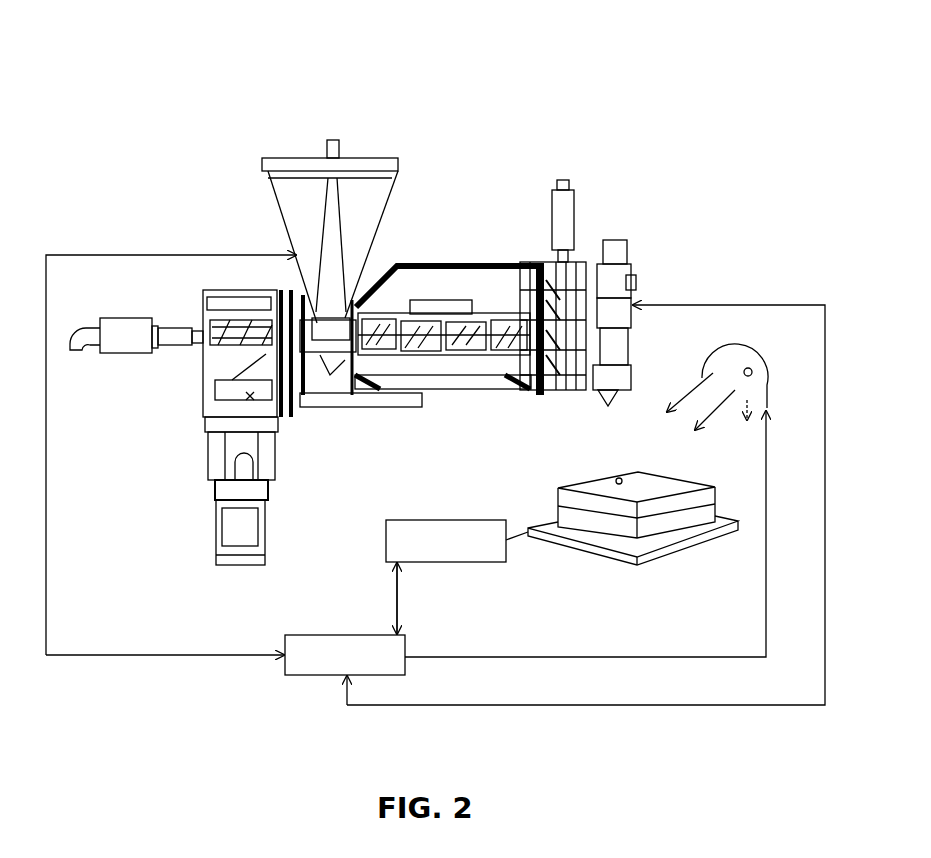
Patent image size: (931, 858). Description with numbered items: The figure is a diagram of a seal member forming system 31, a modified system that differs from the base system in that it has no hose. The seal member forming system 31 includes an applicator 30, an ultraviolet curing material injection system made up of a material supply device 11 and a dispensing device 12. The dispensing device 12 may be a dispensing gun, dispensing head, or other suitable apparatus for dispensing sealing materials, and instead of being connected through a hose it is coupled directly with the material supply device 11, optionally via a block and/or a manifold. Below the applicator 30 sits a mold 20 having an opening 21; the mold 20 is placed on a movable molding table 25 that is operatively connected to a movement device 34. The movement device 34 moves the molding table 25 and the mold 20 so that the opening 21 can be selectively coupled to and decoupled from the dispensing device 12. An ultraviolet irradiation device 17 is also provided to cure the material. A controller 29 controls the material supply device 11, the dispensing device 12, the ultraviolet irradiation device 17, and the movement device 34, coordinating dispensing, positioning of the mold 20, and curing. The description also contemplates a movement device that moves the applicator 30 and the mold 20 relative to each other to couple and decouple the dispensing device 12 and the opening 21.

The material supply device 11 is at (292, 190).
The dispensing device 12 is at (618, 376).
The ultraviolet irradiation device 17 is at (770, 392).
The mold 20 is at (683, 490).
The opening 21 is at (622, 478).
The molding table 25 is at (681, 550).
The controller 29 is at (345, 635).
The applicator 30 is at (588, 172).
The seal member forming system 31 is at (494, 110).
The movement device 34 is at (448, 520).